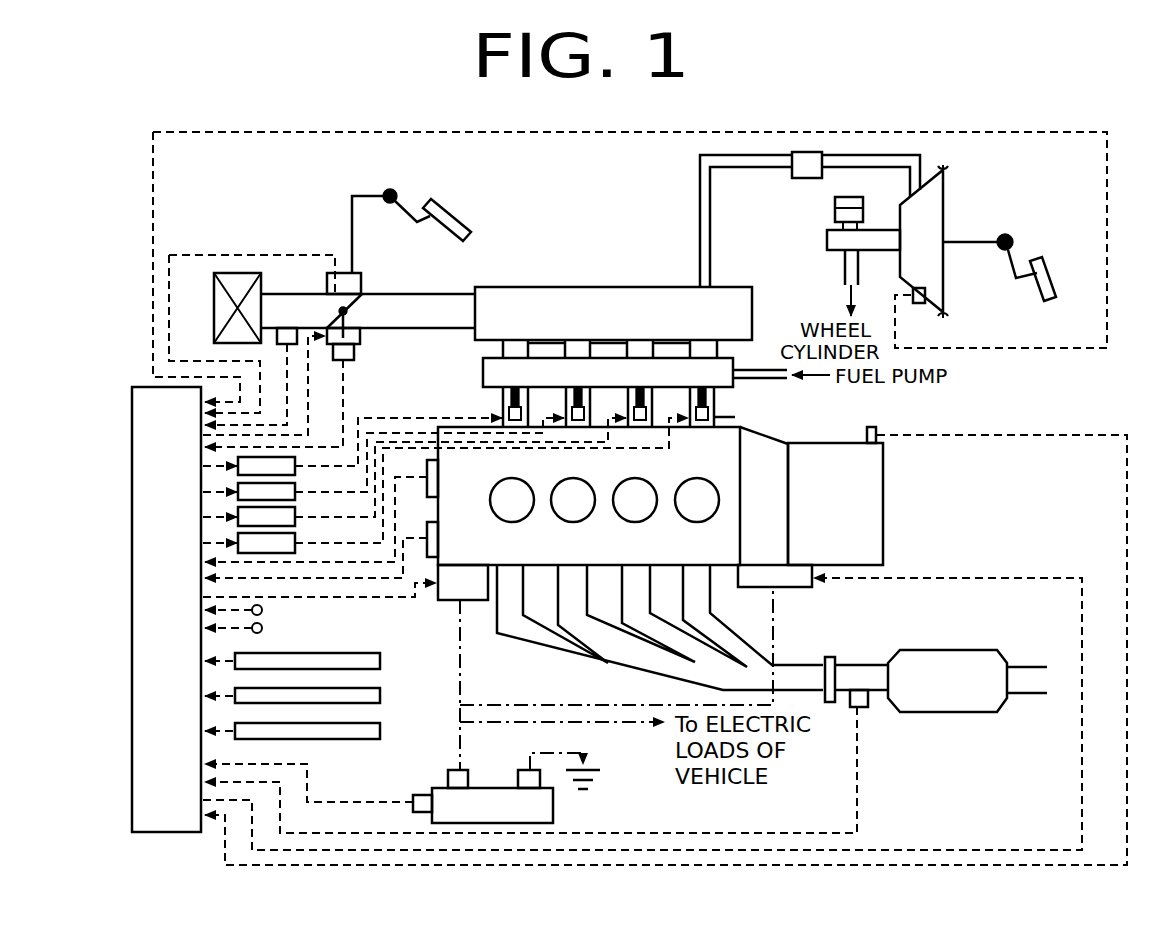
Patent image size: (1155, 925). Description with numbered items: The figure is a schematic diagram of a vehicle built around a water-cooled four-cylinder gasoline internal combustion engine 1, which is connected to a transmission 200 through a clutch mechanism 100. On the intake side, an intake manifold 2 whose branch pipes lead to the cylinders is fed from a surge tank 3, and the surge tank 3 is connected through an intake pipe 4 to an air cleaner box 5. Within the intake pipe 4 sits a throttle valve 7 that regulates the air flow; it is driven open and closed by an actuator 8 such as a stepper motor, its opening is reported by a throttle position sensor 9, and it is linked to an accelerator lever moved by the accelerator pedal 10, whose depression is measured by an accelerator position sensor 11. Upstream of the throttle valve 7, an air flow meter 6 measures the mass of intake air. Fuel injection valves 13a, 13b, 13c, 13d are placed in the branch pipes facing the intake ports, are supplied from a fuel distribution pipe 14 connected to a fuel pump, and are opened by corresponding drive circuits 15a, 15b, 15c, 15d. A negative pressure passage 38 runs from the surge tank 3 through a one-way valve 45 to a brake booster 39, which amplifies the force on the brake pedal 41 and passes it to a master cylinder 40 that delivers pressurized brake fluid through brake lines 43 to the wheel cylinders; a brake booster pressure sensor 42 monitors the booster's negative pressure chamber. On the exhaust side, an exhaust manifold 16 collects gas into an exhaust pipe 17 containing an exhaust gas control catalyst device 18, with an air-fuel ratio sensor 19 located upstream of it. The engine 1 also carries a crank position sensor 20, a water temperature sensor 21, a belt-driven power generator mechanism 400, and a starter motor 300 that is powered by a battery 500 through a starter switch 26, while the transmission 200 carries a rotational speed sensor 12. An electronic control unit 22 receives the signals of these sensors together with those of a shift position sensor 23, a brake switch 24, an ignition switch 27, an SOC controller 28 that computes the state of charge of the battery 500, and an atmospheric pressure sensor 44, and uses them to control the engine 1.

The internal combustion engine 1 is at (745, 428).
The intake manifold 2 is at (715, 420).
The surge tank 3 is at (725, 287).
The intake pipe 4 is at (390, 295).
The air cleaner box 5 is at (216, 305).
The air flow meter 6 is at (287, 345).
The throttle valve 7 is at (363, 307).
The actuator 8 is at (360, 340).
The throttle position sensor 9 is at (352, 358).
The accelerator pedal 10 is at (432, 204).
The accelerator position sensor 11 is at (355, 273).
The rotational speed sensor 12 is at (877, 430).
The fuel injection valve 13a is at (506, 410).
The fuel injection valve 13b is at (568, 410).
The fuel injection valve 13c is at (630, 410).
The fuel injection valve 13d is at (693, 410).
The fuel distribution pipe 14 is at (620, 357).
The drive circuit 15a is at (237, 467).
The drive circuit 15b is at (237, 492).
The drive circuit 15c is at (237, 517).
The drive circuit 15d is at (237, 543).
The exhaust manifold 16 is at (522, 630).
The exhaust pipe 17 is at (860, 665).
The exhaust gas control catalyst device 18 is at (945, 650).
The air-fuel ratio sensor 19 is at (866, 707).
The crank position sensor 20 is at (438, 475).
The water temperature sensor 21 is at (438, 538).
The electronic control unit 22 is at (138, 412).
The shift position sensor 23 is at (382, 661).
The brake switch 24 is at (382, 696).
The starter switch 26 is at (277, 611).
The ignition switch 27 is at (276, 629).
The SOC controller 28 is at (418, 795).
The negative pressure passage 38 is at (702, 228).
The brake booster 39 is at (937, 228).
The master cylinder 40 is at (827, 240).
The brake pedal 41 is at (1050, 275).
The brake booster pressure sensor 42 is at (919, 303).
The brake lines 43 is at (845, 270).
The atmospheric pressure sensor 44 is at (382, 731).
The one-way valve 45 is at (807, 173).
The clutch mechanism 100 is at (790, 443).
The transmission 200 is at (880, 485).
The starter motor 300 is at (805, 587).
The power generator mechanism 400 is at (445, 600).
The battery 500 is at (555, 806).